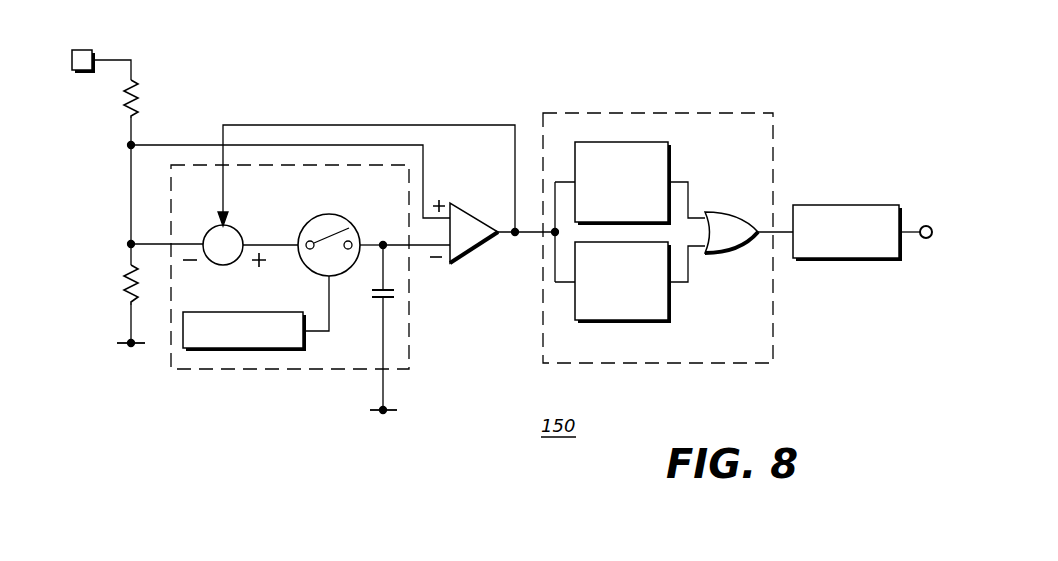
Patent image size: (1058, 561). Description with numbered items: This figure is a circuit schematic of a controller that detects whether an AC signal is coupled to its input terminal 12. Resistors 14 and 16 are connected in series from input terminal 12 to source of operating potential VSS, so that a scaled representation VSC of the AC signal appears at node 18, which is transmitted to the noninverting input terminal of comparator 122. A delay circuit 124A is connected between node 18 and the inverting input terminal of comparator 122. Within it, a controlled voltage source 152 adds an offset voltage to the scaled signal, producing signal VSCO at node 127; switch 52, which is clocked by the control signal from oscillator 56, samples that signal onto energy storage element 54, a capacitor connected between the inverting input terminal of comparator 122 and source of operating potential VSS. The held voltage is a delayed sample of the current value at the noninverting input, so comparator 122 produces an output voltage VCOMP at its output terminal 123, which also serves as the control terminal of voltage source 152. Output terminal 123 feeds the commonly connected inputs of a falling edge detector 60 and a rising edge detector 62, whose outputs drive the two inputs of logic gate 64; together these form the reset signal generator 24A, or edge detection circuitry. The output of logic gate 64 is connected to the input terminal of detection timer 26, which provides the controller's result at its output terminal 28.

The input terminal 12 is at (84, 50).
The resistor 14 is at (138, 95).
The resistor 16 is at (128, 283).
The node 18 is at (131, 206).
The controlled voltage source 152 is at (209, 229).
The node 127 is at (270, 243).
The switch 52 is at (334, 215).
The energy storage element 54 is at (372, 298).
The oscillator 56 is at (228, 312).
The delay circuit 124A is at (245, 370).
The comparator 122 is at (466, 212).
The output terminal 123 is at (536, 234).
The falling edge detector 60 is at (643, 142).
The rising edge detector 62 is at (650, 322).
The logic gate 64 is at (731, 256).
The reset signal generator 24A is at (700, 364).
The detection timer 26 is at (851, 205).
The output terminal 28 is at (926, 225).